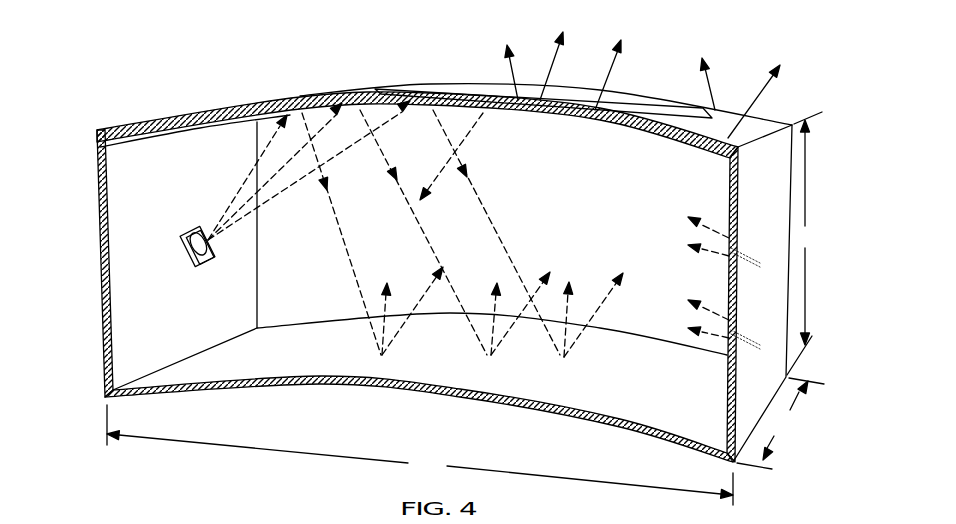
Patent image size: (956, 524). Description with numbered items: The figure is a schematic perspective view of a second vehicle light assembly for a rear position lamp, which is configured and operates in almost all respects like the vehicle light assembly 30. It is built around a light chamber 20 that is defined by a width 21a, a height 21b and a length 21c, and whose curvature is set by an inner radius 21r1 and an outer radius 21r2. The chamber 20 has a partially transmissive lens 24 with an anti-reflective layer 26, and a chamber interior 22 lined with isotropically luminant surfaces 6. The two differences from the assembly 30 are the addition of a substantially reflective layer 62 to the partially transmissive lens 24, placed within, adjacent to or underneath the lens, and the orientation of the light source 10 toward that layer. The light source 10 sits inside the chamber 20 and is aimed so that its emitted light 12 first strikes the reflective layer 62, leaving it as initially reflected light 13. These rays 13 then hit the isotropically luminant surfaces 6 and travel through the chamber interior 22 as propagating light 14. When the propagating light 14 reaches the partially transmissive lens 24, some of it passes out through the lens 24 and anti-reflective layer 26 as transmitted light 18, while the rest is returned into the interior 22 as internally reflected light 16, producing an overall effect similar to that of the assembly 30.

The vehicle light assembly 30 is at (135, 75).
The partially transmissive lens 24 is at (93, 127).
The anti-reflective layer 26 is at (117, 147).
The chamber interior 22 is at (162, 192).
The light source 10 is at (178, 235).
The isotropically luminant surfaces 6 is at (125, 320).
The light 12 is at (240, 192).
The initially reflected light 13 is at (431, 246).
The internally reflected light 16 is at (462, 143).
The propagating light 14 is at (569, 316).
The transmitted light 18 is at (549, 72).
The substantially reflective layer 62 is at (633, 104).
The light chamber 20 is at (838, 298).
The width 21a is at (780, 423).
The height 21b is at (807, 243).
The length 21c is at (420, 455).
The inner radius 21r1 is at (408, 414).
The outer radius 21r2 is at (467, 43).